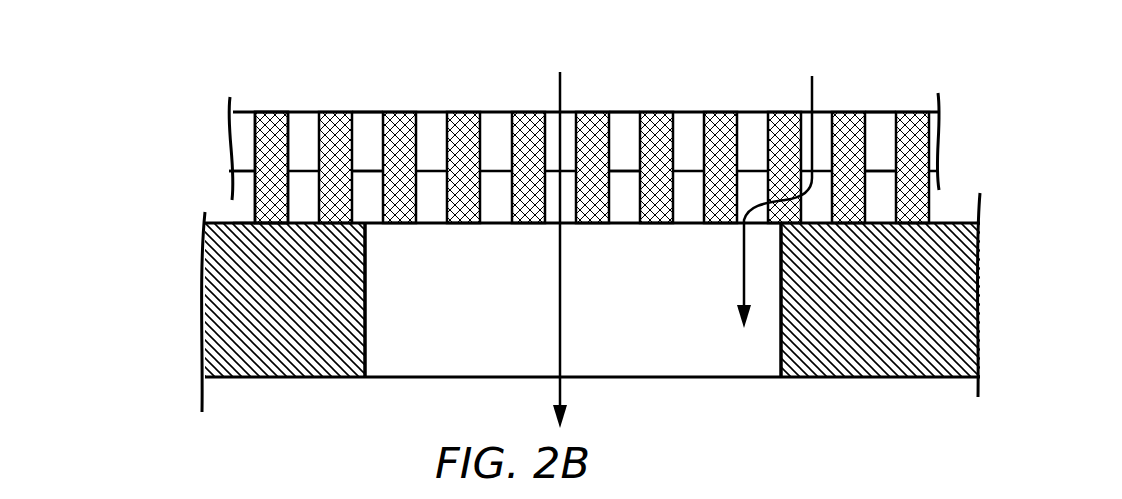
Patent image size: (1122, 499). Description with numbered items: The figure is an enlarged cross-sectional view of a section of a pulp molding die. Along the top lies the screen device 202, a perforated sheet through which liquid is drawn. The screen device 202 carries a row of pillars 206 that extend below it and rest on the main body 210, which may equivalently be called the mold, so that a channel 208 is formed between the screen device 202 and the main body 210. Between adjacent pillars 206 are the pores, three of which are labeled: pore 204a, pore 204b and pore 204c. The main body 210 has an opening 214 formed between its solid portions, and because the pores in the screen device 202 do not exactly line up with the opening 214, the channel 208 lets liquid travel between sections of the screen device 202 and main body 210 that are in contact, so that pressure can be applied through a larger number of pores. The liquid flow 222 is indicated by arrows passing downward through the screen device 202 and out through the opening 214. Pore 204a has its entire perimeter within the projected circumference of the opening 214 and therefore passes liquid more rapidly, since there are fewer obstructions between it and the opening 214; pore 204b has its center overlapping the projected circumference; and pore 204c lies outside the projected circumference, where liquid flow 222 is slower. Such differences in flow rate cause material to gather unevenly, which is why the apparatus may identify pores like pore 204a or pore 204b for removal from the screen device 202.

The screen device 202 is at (291, 82).
The pore 204a is at (625, 112).
The pore 204b is at (362, 112).
The pore 204c is at (877, 112).
The pillar 206 is at (254, 206).
The channel 208 is at (218, 205).
The main body 210 is at (292, 399).
The opening 214 is at (747, 379).
The liquid flow 222 is at (743, 271).